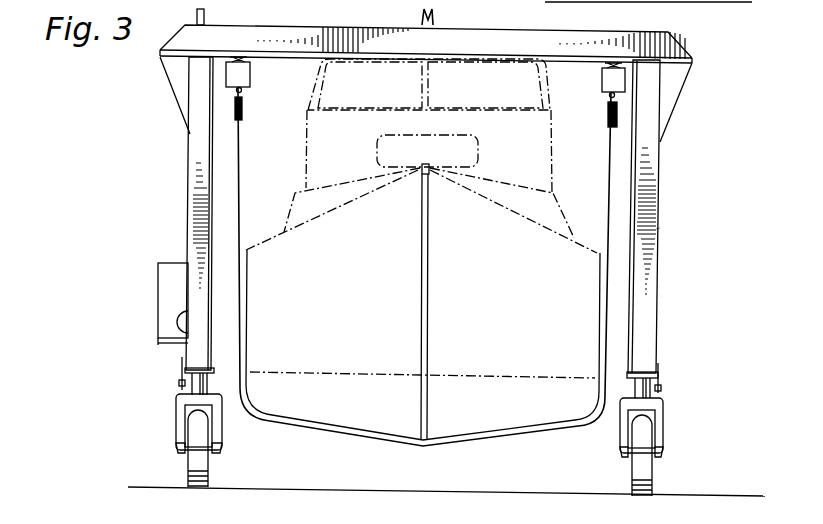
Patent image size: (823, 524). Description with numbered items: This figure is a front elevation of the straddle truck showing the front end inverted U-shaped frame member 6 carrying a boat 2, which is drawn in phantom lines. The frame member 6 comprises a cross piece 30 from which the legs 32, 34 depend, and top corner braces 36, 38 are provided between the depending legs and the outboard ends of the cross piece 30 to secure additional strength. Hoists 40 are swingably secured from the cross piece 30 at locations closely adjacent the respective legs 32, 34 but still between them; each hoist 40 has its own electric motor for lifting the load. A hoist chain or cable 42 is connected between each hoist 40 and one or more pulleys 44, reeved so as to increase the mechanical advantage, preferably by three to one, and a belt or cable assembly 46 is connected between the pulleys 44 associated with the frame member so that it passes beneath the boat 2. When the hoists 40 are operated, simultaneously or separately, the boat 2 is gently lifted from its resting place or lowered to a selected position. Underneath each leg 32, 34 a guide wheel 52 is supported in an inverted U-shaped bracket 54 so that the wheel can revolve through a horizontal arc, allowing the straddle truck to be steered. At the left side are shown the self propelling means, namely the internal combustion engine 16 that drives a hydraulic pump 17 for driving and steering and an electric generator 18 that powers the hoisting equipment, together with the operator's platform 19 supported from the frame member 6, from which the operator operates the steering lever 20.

The boat 2 is at (431, 307).
The front end inverted U-shaped frame member 6 is at (661, 227).
The internal combustion engine 16 is at (145, 294).
The hydraulic pump 17 is at (157, 297).
The electric generator 18 is at (172, 323).
The operator's platform 19 is at (158, 343).
The steering lever 20 is at (206, 19).
The cross piece 30 is at (331, 27).
The leg 32 is at (184, 181).
The leg 34 is at (667, 158).
The top corner brace 36 is at (170, 77).
The top corner brace 38 is at (681, 100).
The hoist 40 is at (251, 73).
The hoist chain or cable 42 is at (246, 91).
The pulley 44 is at (243, 110).
The belt or cable assembly 46 is at (241, 173).
The guide wheel 52 is at (208, 477).
The inverted U-shaped bracket 54 is at (230, 418).